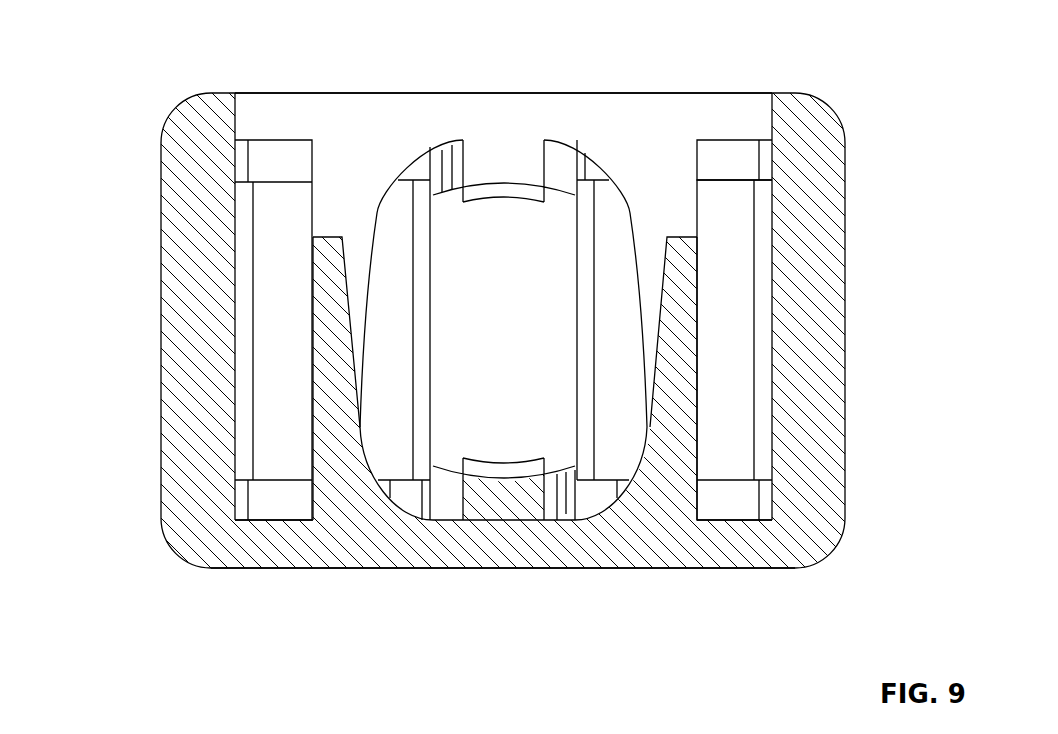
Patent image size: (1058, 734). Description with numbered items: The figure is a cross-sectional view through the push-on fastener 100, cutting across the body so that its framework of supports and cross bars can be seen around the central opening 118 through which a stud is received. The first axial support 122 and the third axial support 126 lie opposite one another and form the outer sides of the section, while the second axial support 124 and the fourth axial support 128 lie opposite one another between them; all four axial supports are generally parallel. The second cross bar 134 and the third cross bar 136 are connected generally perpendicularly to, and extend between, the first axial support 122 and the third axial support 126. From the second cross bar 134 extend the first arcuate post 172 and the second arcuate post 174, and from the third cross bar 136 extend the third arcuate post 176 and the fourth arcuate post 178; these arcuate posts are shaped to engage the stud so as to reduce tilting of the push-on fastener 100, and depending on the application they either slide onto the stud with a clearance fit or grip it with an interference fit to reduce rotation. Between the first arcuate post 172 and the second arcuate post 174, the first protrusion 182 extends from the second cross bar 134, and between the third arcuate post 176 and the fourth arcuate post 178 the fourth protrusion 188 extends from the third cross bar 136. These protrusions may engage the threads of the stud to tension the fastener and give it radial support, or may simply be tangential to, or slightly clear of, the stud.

The push-on fastener 100 is at (140, 60).
The opening 118 is at (503, 396).
The first axial support 122 is at (192, 347).
The second axial support 124 is at (515, 533).
The third axial support 126 is at (830, 232).
The fourth axial support 128 is at (505, 123).
The second cross bar 134 is at (742, 535).
The third cross bar 136 is at (723, 118).
The first arcuate post 172 is at (345, 450).
The second arcuate post 174 is at (660, 455).
The third arcuate post 176 is at (345, 158).
The fourth arcuate post 178 is at (647, 158).
The first protrusion 182 is at (504, 458).
The fourth protrusion 188 is at (505, 172).